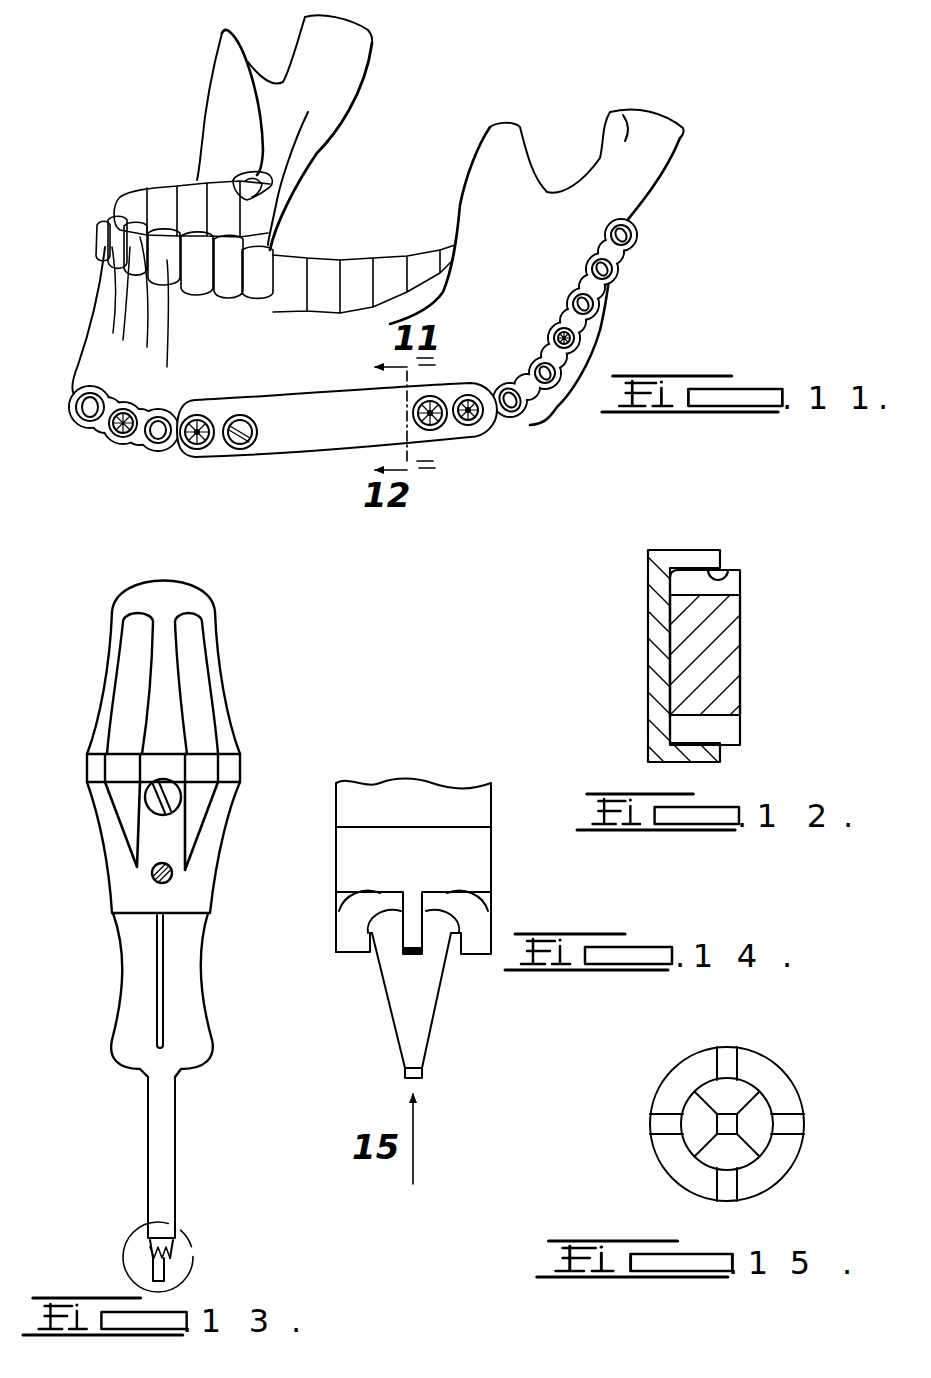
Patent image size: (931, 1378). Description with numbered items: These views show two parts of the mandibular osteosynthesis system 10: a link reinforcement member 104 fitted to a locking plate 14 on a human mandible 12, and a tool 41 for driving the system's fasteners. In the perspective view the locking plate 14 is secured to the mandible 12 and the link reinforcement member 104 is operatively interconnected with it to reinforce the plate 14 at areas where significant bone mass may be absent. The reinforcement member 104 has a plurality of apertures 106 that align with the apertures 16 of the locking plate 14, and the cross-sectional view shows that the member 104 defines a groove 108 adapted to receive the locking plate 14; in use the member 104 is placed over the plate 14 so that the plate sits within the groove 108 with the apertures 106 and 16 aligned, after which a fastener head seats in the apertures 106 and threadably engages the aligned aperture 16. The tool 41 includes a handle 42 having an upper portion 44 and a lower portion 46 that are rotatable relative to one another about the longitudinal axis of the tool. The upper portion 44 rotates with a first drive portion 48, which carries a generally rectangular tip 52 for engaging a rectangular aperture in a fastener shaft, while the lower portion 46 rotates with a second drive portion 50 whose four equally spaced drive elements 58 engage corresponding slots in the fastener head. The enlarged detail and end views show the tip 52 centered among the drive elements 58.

In FIG. 11, the mandibular osteosynthesis system 10 is at (398, 361).
In FIG. 11, the mandible 12 is at (690, 142).
In FIG. 11, the locking plate 14 is at (610, 318).
In FIG. 12, the locking plate 14 is at (752, 582).
In FIG. 13, the locking plate 14 is at (122, 1240).
In FIG. 11, the apertures 16 is at (548, 365).
In FIG. 11, the link reinforcement member 104 is at (268, 398).
In FIG. 12, the link reinforcement member 104 is at (695, 545).
In FIG. 11, the apertures 106 is at (247, 446).
In FIG. 11, the groove 108 is at (478, 422).
In FIG. 12, the groove 108 is at (724, 572).
In FIG. 13, the screwdriver 41 is at (173, 910).
In FIG. 14, the screwdriver 41 is at (441, 899).
In FIG. 13, the handle 42 is at (195, 726).
In FIG. 13, the upper portion 44 is at (220, 693).
In FIG. 13, the lower portion 46 is at (114, 939).
In FIG. 14, the first drive portion 48 is at (386, 1008).
In FIG. 15, the first drive portion 48 is at (768, 1081).
In FIG. 14, the second drive portion 50 is at (448, 867).
In FIG. 15, the second drive portion 50 is at (697, 1108).
In FIG. 14, the rectangular tip 52 is at (403, 1078).
In FIG. 15, the rectangular tip 52 is at (740, 1113).
In FIG. 14, the drive elements 58 is at (492, 931).
In FIG. 15, the drive elements 58 is at (720, 1055).